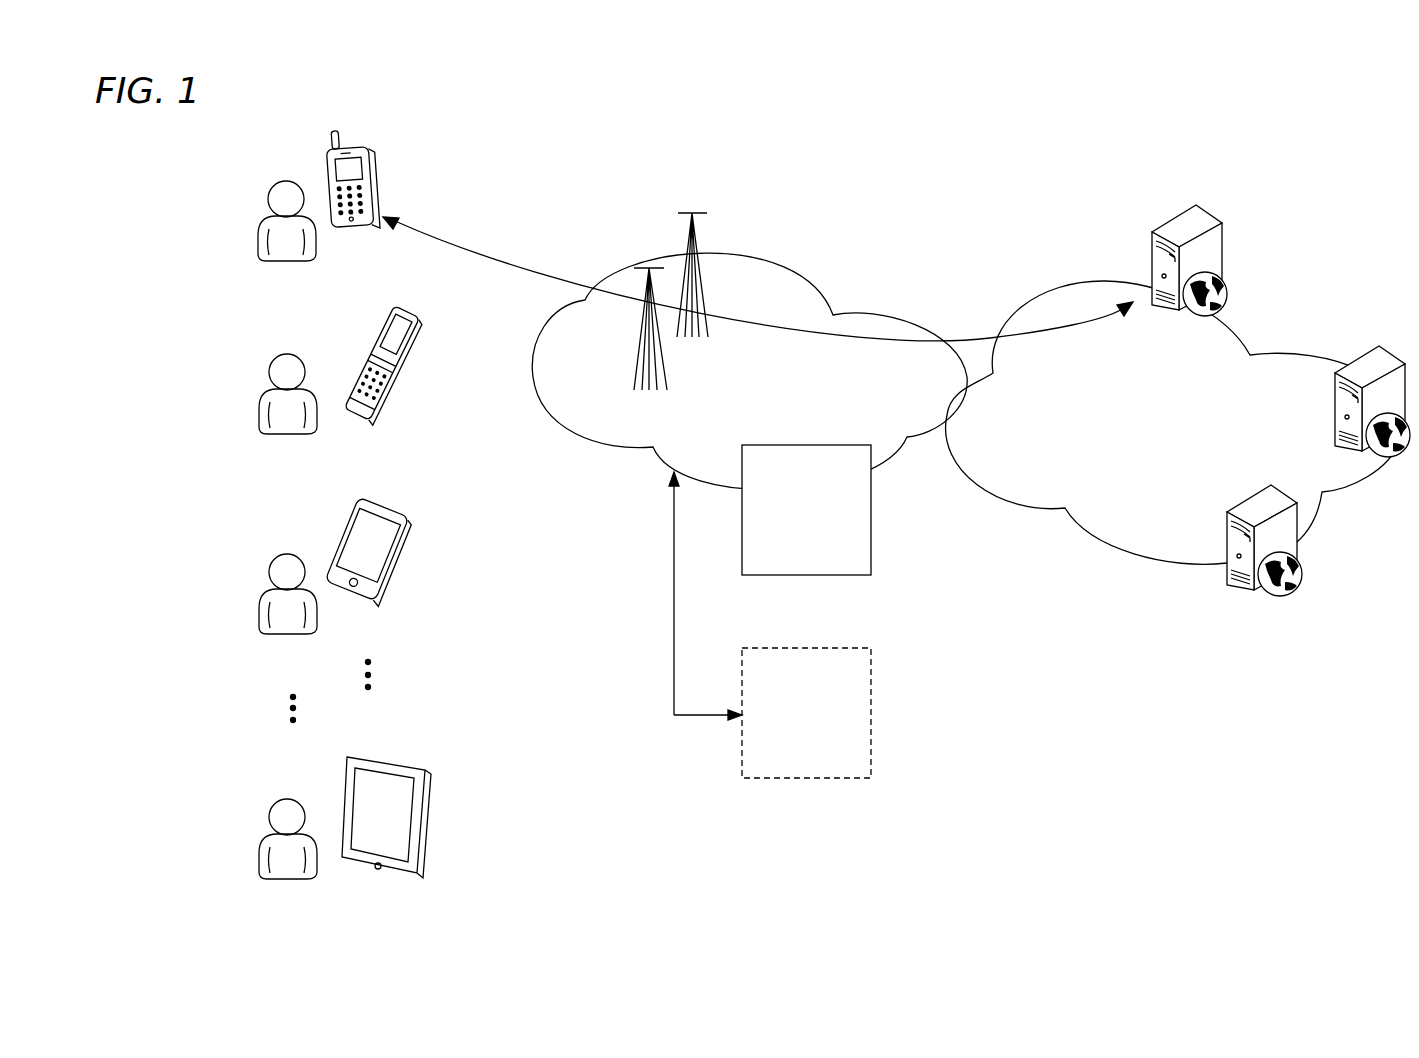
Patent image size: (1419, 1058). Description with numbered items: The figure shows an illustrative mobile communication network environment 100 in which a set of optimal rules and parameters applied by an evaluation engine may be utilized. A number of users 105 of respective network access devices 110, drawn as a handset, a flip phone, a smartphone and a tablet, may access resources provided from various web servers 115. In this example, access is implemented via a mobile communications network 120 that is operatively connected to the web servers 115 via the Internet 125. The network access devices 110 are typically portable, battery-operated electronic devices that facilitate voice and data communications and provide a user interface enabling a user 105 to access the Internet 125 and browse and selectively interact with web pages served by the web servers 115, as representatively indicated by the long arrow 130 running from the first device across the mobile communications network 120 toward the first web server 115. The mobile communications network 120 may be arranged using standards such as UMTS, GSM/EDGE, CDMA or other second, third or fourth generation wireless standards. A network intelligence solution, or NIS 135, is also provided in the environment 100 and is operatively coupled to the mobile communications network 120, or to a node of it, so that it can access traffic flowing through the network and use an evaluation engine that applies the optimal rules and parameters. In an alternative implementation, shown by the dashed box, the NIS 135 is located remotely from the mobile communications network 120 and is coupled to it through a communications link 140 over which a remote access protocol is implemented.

The mobile communication network environment 100 is at (814, 114).
The users 105 is at (232, 846).
The network access devices 110 is at (376, 183).
The web servers 115 is at (1178, 207).
The mobile communications network 120 is at (770, 256).
The Internet 125 is at (1055, 290).
The access to the Internet and web pages 130 is at (532, 268).
The network intelligence solution (NIS) 135 is at (872, 540).
The communications link 140 is at (674, 586).